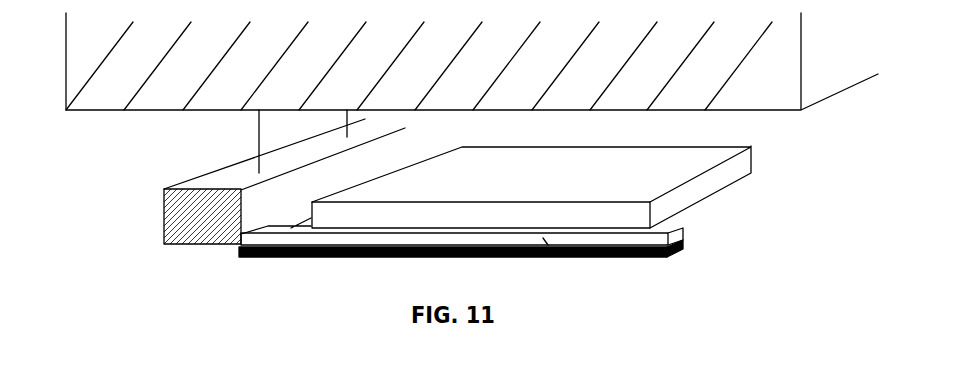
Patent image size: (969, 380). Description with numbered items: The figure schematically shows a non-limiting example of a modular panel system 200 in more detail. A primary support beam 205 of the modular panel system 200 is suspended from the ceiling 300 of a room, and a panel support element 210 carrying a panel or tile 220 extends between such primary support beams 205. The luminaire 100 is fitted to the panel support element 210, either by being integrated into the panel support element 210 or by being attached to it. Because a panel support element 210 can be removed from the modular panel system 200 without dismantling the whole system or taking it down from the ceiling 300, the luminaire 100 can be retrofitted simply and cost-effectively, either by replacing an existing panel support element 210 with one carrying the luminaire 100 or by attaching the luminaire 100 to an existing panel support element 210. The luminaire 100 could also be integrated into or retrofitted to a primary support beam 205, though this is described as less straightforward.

The ceiling 300 is at (85, 102).
The modular panel system 200 is at (135, 222).
The primary support beam 205 is at (193, 228).
The panel support element 210 is at (593, 257).
The panel or tile 220 is at (737, 175).
The luminaire 100 is at (667, 255).